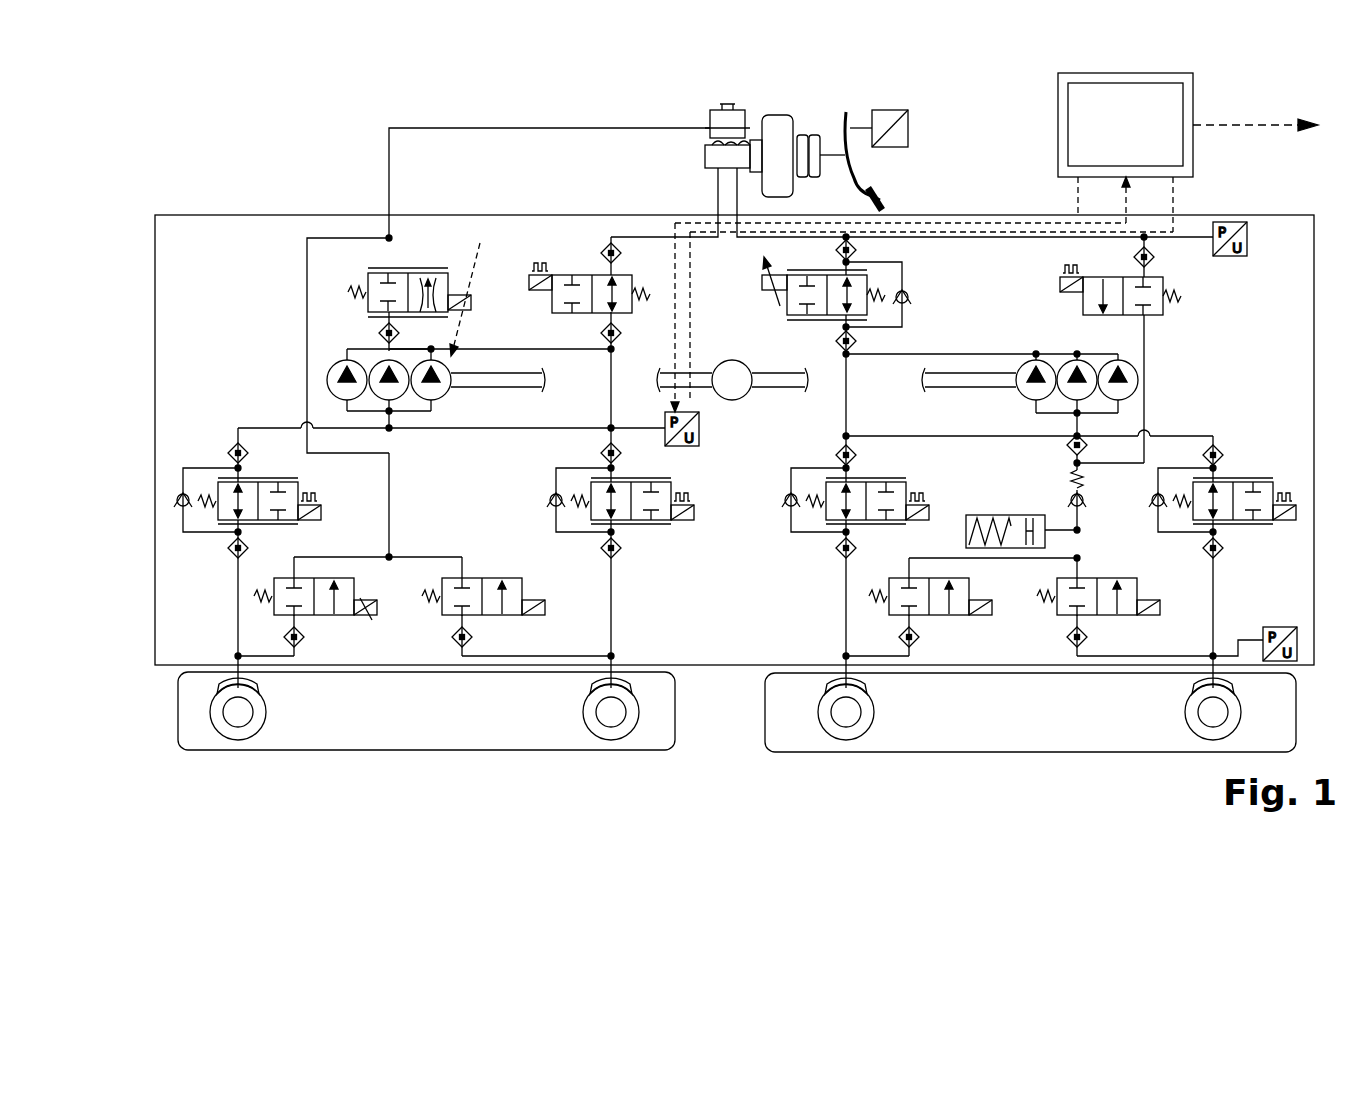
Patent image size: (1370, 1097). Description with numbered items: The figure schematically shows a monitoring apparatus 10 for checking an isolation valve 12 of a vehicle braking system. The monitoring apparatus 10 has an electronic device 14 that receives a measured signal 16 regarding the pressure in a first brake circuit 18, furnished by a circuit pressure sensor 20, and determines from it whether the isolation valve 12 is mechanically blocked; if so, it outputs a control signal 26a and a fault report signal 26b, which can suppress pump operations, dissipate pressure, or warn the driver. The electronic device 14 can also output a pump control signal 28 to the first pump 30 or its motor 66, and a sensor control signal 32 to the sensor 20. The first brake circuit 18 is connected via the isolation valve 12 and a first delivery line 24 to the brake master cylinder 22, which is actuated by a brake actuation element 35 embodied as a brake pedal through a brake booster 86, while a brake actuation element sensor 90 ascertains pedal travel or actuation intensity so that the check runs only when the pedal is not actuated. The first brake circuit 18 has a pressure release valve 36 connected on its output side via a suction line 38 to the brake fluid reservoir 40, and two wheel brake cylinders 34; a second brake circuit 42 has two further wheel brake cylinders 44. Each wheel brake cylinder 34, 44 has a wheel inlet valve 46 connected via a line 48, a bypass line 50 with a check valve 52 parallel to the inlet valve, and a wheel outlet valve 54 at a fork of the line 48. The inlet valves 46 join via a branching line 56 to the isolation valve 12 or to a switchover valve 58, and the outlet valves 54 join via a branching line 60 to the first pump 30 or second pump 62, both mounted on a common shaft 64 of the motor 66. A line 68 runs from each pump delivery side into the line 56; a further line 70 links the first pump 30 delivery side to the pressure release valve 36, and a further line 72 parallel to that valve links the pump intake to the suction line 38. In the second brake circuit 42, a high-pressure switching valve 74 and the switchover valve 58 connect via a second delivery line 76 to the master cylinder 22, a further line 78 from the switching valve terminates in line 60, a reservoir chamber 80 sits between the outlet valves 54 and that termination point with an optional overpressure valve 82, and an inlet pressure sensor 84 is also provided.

The monitoring apparatus 10 is at (1193, 150).
The isolation valve 12 is at (578, 275).
The electronic device 14 is at (1092, 85).
The measured signal 16 is at (1138, 187).
The first brake circuit 18 is at (630, 597).
The circuit pressure sensor 20 is at (698, 434).
The brake master cylinder 22 is at (705, 158).
The first delivery line 24 is at (718, 190).
The control signal 26a is at (1262, 100).
The fault report signal 26b is at (1276, 124).
The pump control signal 28 is at (1078, 194).
The first pump 30 is at (347, 362).
The sensor control signal 32 is at (1175, 192).
The wheel brake cylinder 34 is at (258, 690).
The brake actuation element 35 is at (860, 158).
The pressure release valve 36 is at (368, 288).
The suction line 38 is at (548, 128).
The brake fluid reservoir 40 is at (710, 114).
The second brake circuit 42 is at (806, 597).
The wheel brake cylinder 44 is at (868, 690).
The wheel inlet valve 46 is at (299, 488).
The line 48 is at (238, 634).
The bypass line 50 is at (192, 532).
The check valve 52 is at (175, 499).
The wheel outlet valve 54 is at (478, 578).
The branching line 56 is at (611, 424).
The switchover valve 58 is at (787, 310).
The branching line 60 is at (389, 489).
The second pump 62 is at (1013, 395).
The common shaft 64 is at (788, 388).
The motor 66 is at (726, 362).
The line 68 is at (536, 349).
The further line 70 is at (399, 333).
The further line 72 is at (307, 346).
The high-pressure switching valve 74 is at (1083, 308).
The second delivery line 76 is at (740, 225).
The further line 78 is at (1144, 354).
The reservoir chamber 80 is at (1003, 515).
The overpressure valve 82 is at (1069, 494).
The inlet pressure sensor 84 is at (1230, 255).
The brake booster 86 is at (793, 189).
The brake actuation element sensor 90 is at (908, 118).